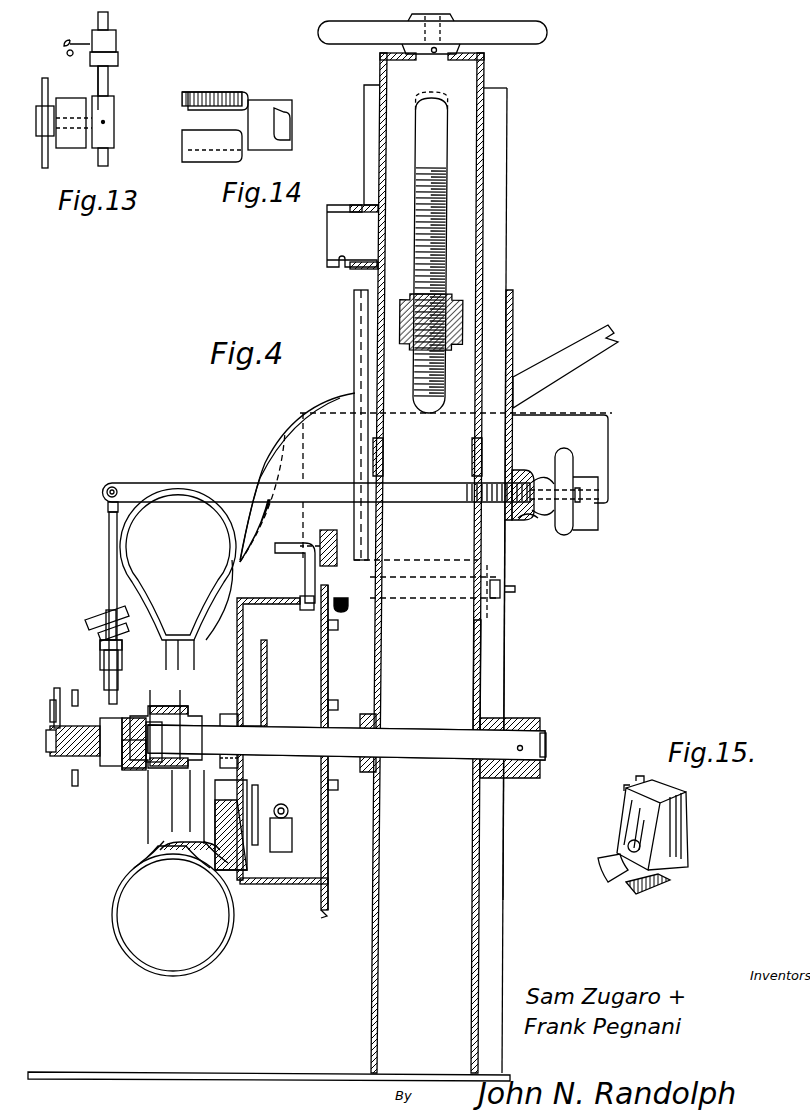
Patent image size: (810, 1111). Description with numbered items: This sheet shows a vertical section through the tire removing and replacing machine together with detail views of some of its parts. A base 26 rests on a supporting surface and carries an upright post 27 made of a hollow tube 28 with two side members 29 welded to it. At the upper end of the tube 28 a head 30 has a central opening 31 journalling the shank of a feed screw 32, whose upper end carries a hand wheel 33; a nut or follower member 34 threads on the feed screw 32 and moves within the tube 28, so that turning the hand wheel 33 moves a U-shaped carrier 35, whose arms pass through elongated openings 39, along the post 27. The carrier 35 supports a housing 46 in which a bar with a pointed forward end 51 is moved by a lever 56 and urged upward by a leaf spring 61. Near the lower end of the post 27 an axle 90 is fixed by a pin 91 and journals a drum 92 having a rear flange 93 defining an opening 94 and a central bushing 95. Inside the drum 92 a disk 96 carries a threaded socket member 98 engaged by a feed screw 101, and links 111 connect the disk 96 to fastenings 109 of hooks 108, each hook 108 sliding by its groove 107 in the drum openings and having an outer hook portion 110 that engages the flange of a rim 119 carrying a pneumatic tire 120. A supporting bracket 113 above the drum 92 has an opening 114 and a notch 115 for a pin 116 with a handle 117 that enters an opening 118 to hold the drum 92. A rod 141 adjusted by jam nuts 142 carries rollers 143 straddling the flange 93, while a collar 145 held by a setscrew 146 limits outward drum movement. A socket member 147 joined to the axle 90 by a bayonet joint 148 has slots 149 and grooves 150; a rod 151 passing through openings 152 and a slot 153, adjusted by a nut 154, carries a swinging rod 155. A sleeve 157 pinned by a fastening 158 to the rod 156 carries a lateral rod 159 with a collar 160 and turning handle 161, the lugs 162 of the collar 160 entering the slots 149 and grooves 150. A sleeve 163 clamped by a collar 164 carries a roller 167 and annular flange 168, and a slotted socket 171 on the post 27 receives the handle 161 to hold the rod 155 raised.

In FIG. 4, the base 26 is at (178, 1074).
In FIG. 4, the post 27 is at (515, 702).
In FIG. 4, the tube 28 is at (486, 661).
In FIG. 4, the side members 29 is at (514, 900).
In FIG. 4, the head 30 is at (494, 70).
In FIG. 4, the central opening 31 is at (440, 50).
In FIG. 4, the feed screw 32 is at (450, 156).
In FIG. 4, the hand wheel 33 is at (541, 36).
In FIG. 4, the nut or follower member 34 is at (410, 348).
In FIG. 4, the carrier 35 is at (518, 418).
In FIG. 4, the elongated openings 39 is at (417, 154).
In FIG. 4, the housing 46 is at (604, 449).
In FIG. 4, the forward end of bar 51 is at (270, 518).
In FIG. 4, the lever 56 is at (576, 352).
In FIG. 4, the leaf spring 61 is at (540, 524).
In FIG. 4, the axle 90 is at (413, 734).
In FIG. 4, the pin 91 is at (541, 749).
In FIG. 4, the drum 92 is at (279, 892).
In FIG. 4, the flange 93 is at (326, 908).
In FIG. 4, the opening 94 is at (354, 836).
In FIG. 4, the bushing 95 is at (270, 718).
In FIG. 4, the disk 96 is at (268, 652).
In FIG. 4, the threaded socket member 98 is at (288, 810).
In FIG. 4, the feed screw 101 is at (276, 818).
In FIG. 4, the groove 107 is at (226, 886).
In FIG. 15, the groove 107 is at (677, 828).
In FIG. 4, the hook 108 is at (195, 671).
In FIG. 15, the hook 108 is at (644, 885).
In FIG. 4, the fastening 109 is at (218, 884).
In FIG. 15, the fastening 109 is at (628, 844).
In FIG. 4, the hook portion 110 is at (192, 858).
In FIG. 15, the hook portion 110 is at (614, 872).
In FIG. 4, the link 111 is at (258, 788).
In FIG. 4, the supporting bracket 113 is at (380, 552).
In FIG. 4, the perpendicular opening 114 is at (370, 504).
In FIG. 4, the notch 115 is at (266, 520).
In FIG. 4, the pin 116 is at (302, 614).
In FIG. 4, the handle 117 is at (280, 548).
In FIG. 4, the opening 118 is at (290, 590).
In FIG. 4, the rim 119 is at (148, 832).
In FIG. 4, the pneumatic tire 120 is at (166, 978).
In FIG. 4, the rod 141 is at (516, 591).
In FIG. 4, the jam nuts 142 is at (506, 603).
In FIG. 4, the rollers 143 is at (348, 603).
In FIG. 4, the collar 145 is at (222, 740).
In FIG. 4, the setscrew 146 is at (231, 742).
In FIG. 14, the socket member 147 is at (246, 98).
In FIG. 4, the socket member 147 is at (128, 782).
In FIG. 14, the bayonet joint 148 is at (288, 110).
In FIG. 4, the bayonet joint 148 is at (172, 712).
In FIG. 14, the slots 149 is at (248, 103).
In FIG. 4, the slots 149 is at (102, 716).
In FIG. 14, the grooves 150 is at (227, 90).
In FIG. 4, the grooves 150 is at (104, 768).
In FIG. 4, the rod 151 is at (388, 476).
In FIG. 4, the openings 152 is at (384, 462).
In FIG. 4, the slot 153 is at (515, 466).
In FIG. 4, the nut 154 is at (570, 537).
In FIG. 4, the rod 155 is at (110, 532).
In FIG. 13, the rod 156 is at (106, 96).
In FIG. 13, the sleeve 157 is at (115, 104).
In FIG. 4, the sleeve 157 is at (124, 712).
In FIG. 13, the pin or fastening 158 is at (106, 122).
In FIG. 4, the pin or fastening 158 is at (60, 746).
In FIG. 13, the rod 159 is at (66, 102).
In FIG. 4, the rod 159 is at (82, 712).
In FIG. 13, the collar 160 is at (72, 148).
In FIG. 4, the collar 160 is at (70, 680).
In FIG. 13, the turning handle 161 is at (70, 46).
In FIG. 4, the turning handle 161 is at (56, 698).
In FIG. 13, the lugs 162 is at (108, 68).
In FIG. 4, the lugs 162 is at (52, 712).
In FIG. 13, the sleeve 163 is at (114, 32).
In FIG. 4, the sleeve 163 is at (98, 646).
In FIG. 13, the collar 164 is at (98, 30).
In FIG. 4, the collar 164 is at (102, 662).
In FIG. 4, the roller 167 is at (98, 612).
In FIG. 4, the annular flange 168 is at (84, 618).
In FIG. 4, the slotted socket 171 is at (330, 246).